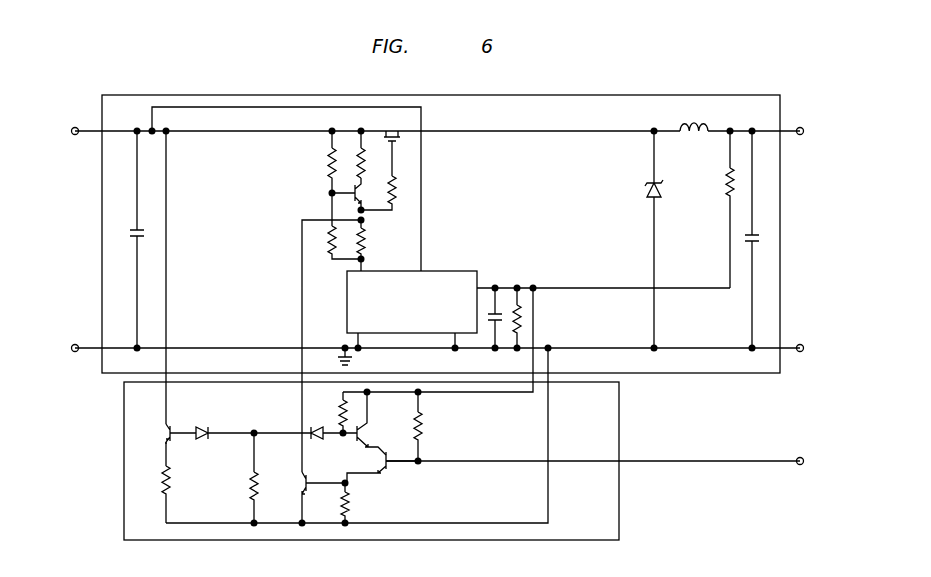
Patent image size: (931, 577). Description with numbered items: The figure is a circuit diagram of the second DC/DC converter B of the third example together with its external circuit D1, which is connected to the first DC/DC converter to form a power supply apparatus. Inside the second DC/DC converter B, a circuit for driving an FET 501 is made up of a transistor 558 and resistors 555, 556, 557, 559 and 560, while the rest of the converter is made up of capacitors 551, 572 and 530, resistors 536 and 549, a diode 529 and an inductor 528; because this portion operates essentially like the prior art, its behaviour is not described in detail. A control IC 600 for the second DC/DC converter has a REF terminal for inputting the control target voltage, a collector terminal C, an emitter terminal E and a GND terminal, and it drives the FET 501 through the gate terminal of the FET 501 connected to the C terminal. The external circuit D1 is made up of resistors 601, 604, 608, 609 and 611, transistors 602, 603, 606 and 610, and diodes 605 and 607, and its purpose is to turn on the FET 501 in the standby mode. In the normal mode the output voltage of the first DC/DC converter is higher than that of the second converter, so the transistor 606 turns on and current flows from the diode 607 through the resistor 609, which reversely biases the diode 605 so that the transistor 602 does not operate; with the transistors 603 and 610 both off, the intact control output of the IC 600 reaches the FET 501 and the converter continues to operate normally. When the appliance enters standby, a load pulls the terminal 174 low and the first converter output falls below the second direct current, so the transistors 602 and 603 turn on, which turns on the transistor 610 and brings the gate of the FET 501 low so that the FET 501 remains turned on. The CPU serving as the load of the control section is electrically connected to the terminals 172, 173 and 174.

The second DC/DC converter B is at (170, 94).
The external circuit D1 is at (124, 518).
The FET 501 is at (392, 128).
The inductor 528 is at (694, 126).
The diode 529 is at (648, 190).
The capacitor 530 is at (746, 238).
The resistor 536 is at (726, 180).
The resistor 549 is at (521, 316).
The capacitor 551 is at (498, 310).
The resistor 555 is at (366, 161).
The resistor 556 is at (397, 189).
The resistor 557 is at (366, 242).
The transistor 558 is at (366, 203).
The resistor 559 is at (326, 162).
The resistor 560 is at (326, 242).
The capacitor 572 is at (130, 234).
The control IC 600 is at (347, 298).
The resistor 601 is at (422, 426).
The transistor 602 is at (366, 442).
The transistor 603 is at (392, 468).
The resistor 604 is at (338, 410).
The diode 605 is at (316, 440).
The transistor 606 is at (166, 431).
The diode 607 is at (202, 427).
The resistor 608 is at (171, 478).
The resistor 609 is at (250, 490).
The transistor 610 is at (298, 479).
The resistor 611 is at (349, 500).
The terminal 172 is at (801, 137).
The terminal 173 is at (800, 354).
The terminal 174 is at (800, 467).